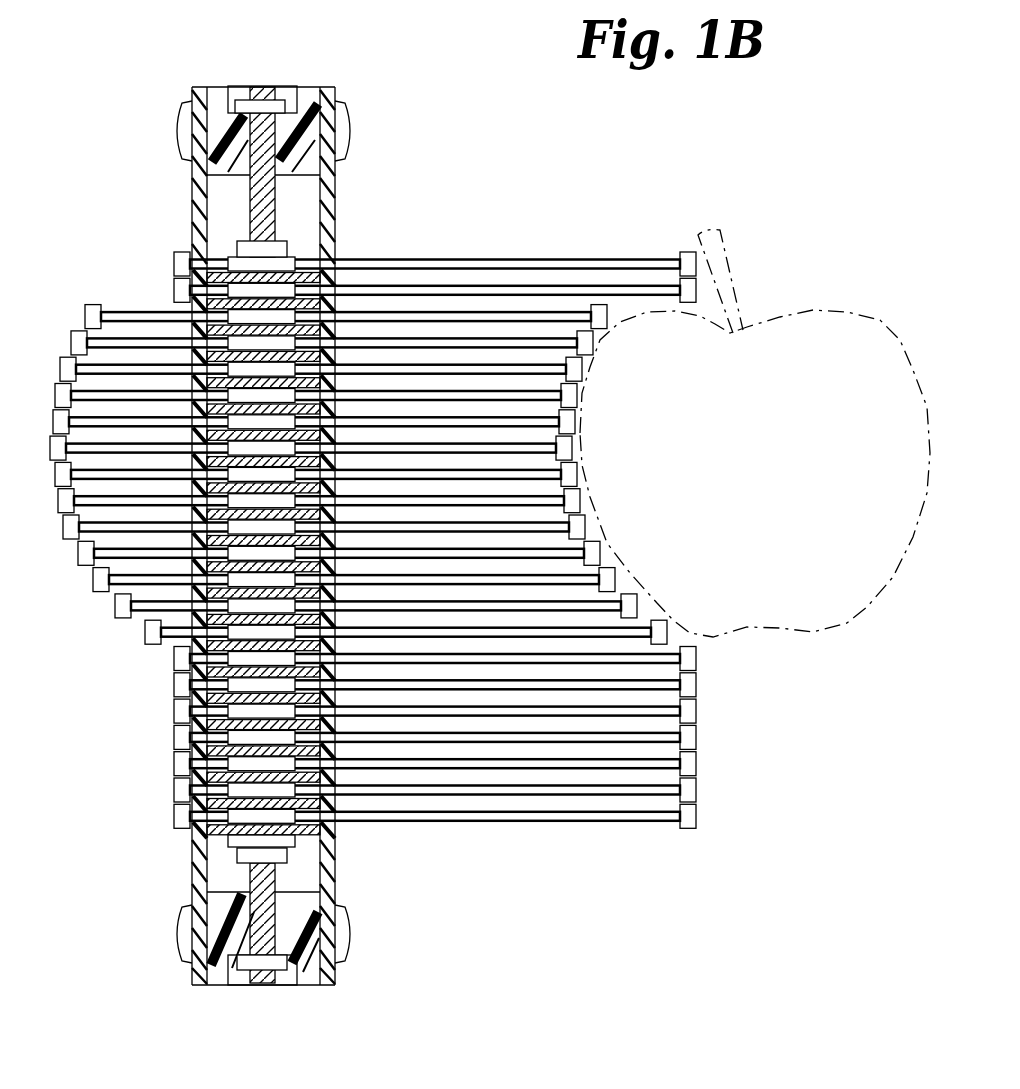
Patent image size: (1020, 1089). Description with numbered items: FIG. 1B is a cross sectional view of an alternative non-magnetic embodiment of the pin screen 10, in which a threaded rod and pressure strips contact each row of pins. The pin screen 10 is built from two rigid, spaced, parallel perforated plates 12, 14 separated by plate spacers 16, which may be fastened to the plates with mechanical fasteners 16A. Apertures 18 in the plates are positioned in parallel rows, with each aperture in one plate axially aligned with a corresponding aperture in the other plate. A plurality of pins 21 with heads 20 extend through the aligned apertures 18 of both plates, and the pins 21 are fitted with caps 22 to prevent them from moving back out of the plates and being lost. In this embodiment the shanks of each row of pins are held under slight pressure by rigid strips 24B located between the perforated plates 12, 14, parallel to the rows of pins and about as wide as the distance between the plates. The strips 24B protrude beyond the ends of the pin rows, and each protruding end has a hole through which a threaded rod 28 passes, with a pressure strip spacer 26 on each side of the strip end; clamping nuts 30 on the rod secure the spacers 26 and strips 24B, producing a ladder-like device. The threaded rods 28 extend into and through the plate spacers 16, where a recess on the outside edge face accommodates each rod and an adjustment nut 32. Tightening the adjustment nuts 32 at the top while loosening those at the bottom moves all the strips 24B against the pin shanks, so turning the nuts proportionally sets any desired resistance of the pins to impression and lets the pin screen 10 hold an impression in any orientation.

The pin screen 10 is at (758, 207).
The perforated plate 12 is at (336, 215).
The perforated plate 14 is at (192, 182).
The plate spacer 16 is at (307, 86).
The mechanical fastener 16A is at (353, 122).
The aperture 18 is at (192, 870).
The pin head 20 is at (696, 820).
The pin 21 is at (560, 257).
The cap 22 is at (86, 583).
The rigid strip 24B is at (176, 277).
The pressure strip spacer 26 is at (300, 258).
The threaded rod 28 is at (272, 205).
The clamping nut 30 is at (238, 250).
The adjustment nut 32 is at (243, 103).